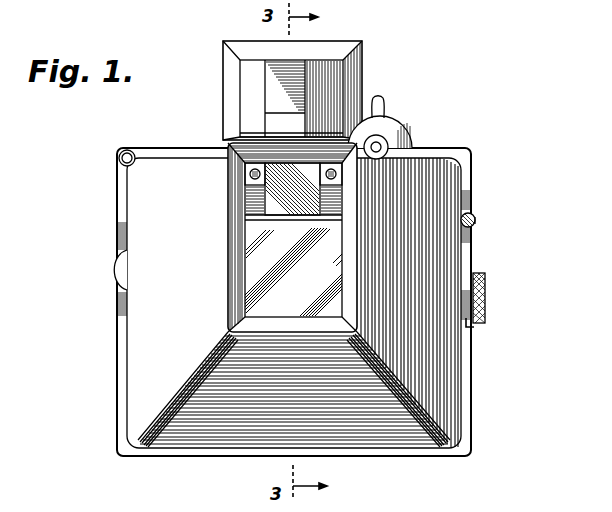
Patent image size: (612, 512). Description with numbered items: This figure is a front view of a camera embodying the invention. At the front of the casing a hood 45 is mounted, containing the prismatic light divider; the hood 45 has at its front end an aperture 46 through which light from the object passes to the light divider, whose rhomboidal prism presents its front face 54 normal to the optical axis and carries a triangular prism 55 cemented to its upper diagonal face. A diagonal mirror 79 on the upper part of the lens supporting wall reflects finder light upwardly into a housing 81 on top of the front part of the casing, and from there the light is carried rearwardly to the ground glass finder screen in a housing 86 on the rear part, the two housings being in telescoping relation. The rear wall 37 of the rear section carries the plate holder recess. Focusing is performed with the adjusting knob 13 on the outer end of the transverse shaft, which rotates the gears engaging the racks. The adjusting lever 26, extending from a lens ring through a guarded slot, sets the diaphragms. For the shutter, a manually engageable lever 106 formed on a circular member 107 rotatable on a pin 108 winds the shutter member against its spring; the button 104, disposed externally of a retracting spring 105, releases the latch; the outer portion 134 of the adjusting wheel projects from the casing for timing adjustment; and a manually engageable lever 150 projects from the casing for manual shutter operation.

The adjusting knob 13 is at (486, 300).
The adjusting lever 26 is at (119, 157).
The rear wall 37 is at (118, 352).
The hood 45 is at (448, 372).
The aperture 46 is at (234, 252).
The front face 54 is at (293, 272).
The triangular prism 55 is at (258, 218).
The diagonal mirror 79 is at (285, 190).
The housing 81 is at (275, 93).
The housing 86 is at (345, 47).
The button 104 is at (477, 222).
The retracting spring 105 is at (471, 214).
The manually engageable lever 106 is at (380, 103).
The circular member 107 is at (394, 128).
The shaft or pin 108 is at (385, 146).
The outer portion 134 is at (117, 266).
The manually engageable lever 150 is at (474, 327).